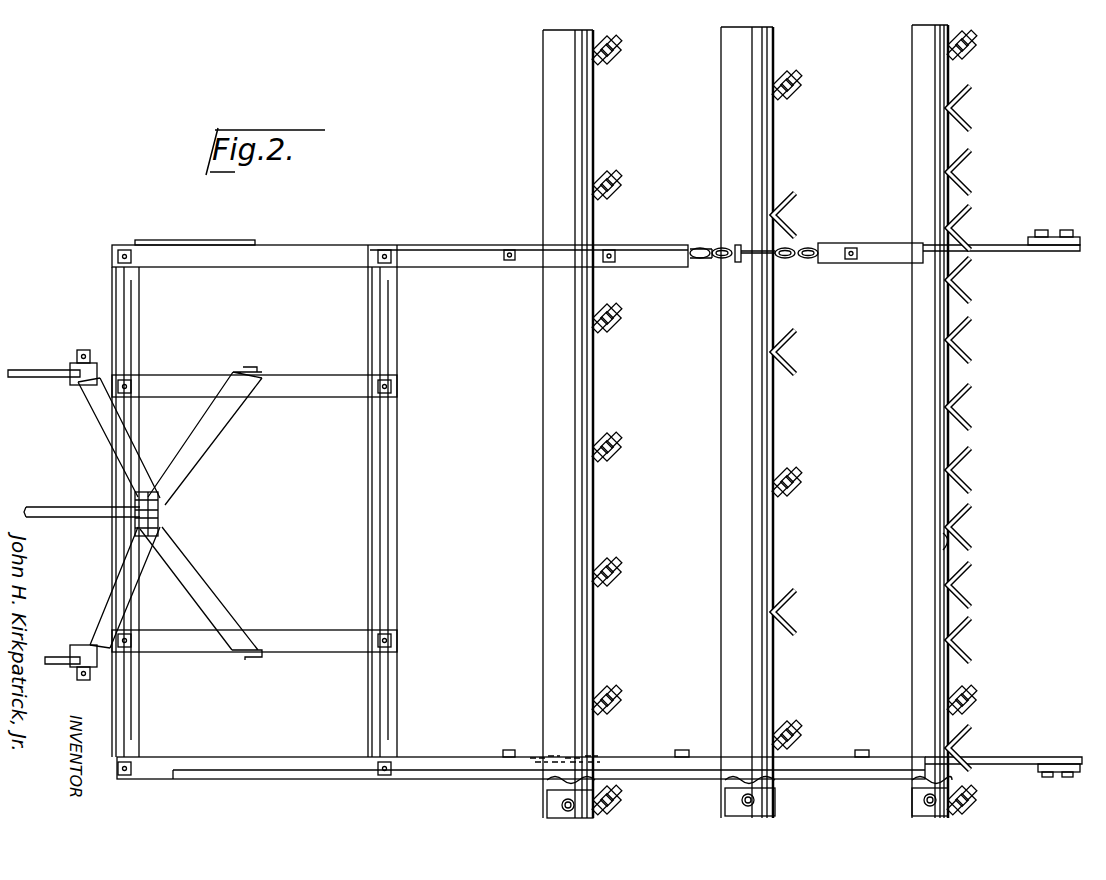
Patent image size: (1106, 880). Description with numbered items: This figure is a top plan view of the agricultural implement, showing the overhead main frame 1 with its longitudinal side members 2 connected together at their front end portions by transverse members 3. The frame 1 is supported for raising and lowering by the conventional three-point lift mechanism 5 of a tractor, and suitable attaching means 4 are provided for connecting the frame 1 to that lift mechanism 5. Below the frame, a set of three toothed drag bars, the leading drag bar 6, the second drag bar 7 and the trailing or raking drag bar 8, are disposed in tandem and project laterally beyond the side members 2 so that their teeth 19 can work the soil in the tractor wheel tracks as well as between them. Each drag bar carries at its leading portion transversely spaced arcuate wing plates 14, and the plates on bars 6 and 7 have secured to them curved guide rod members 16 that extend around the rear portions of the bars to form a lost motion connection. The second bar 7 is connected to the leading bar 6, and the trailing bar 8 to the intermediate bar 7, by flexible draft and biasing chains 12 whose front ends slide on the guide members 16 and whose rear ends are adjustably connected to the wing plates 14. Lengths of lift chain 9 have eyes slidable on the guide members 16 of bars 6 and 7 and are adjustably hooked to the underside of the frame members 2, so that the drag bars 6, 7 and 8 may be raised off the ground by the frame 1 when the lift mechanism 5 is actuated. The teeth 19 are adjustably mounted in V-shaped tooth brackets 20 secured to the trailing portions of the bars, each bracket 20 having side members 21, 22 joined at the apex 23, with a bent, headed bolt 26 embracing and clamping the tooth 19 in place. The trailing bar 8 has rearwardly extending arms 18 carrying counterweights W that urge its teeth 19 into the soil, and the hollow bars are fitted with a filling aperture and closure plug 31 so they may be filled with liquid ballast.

The main frame 1 is at (441, 235).
The longitudinal side members 2 is at (292, 244).
The transverse members 3 is at (134, 322).
The attaching means 4 is at (206, 465).
The three-point lift mechanism 5 is at (38, 372).
The leading drag bar 6 is at (548, 360).
The second drag bar 7 is at (736, 368).
The trailing drag bar 8 is at (922, 360).
The lift chain 9 is at (716, 262).
The chains 12 is at (815, 243).
The arcuate wing plates 14 is at (712, 248).
The curved guide rod members 16 is at (748, 262).
The rearwardly extending arms 18 is at (998, 246).
The counterweights w is at (1058, 236).
The teeth 19 is at (600, 46).
The V-shaped tooth brackets 20 is at (795, 379).
The side member 21 is at (968, 513).
The side member 22 is at (966, 545).
The apex 23 is at (945, 543).
The bent headed bolt 26 is at (618, 56).
The closure plug 31 is at (560, 805).